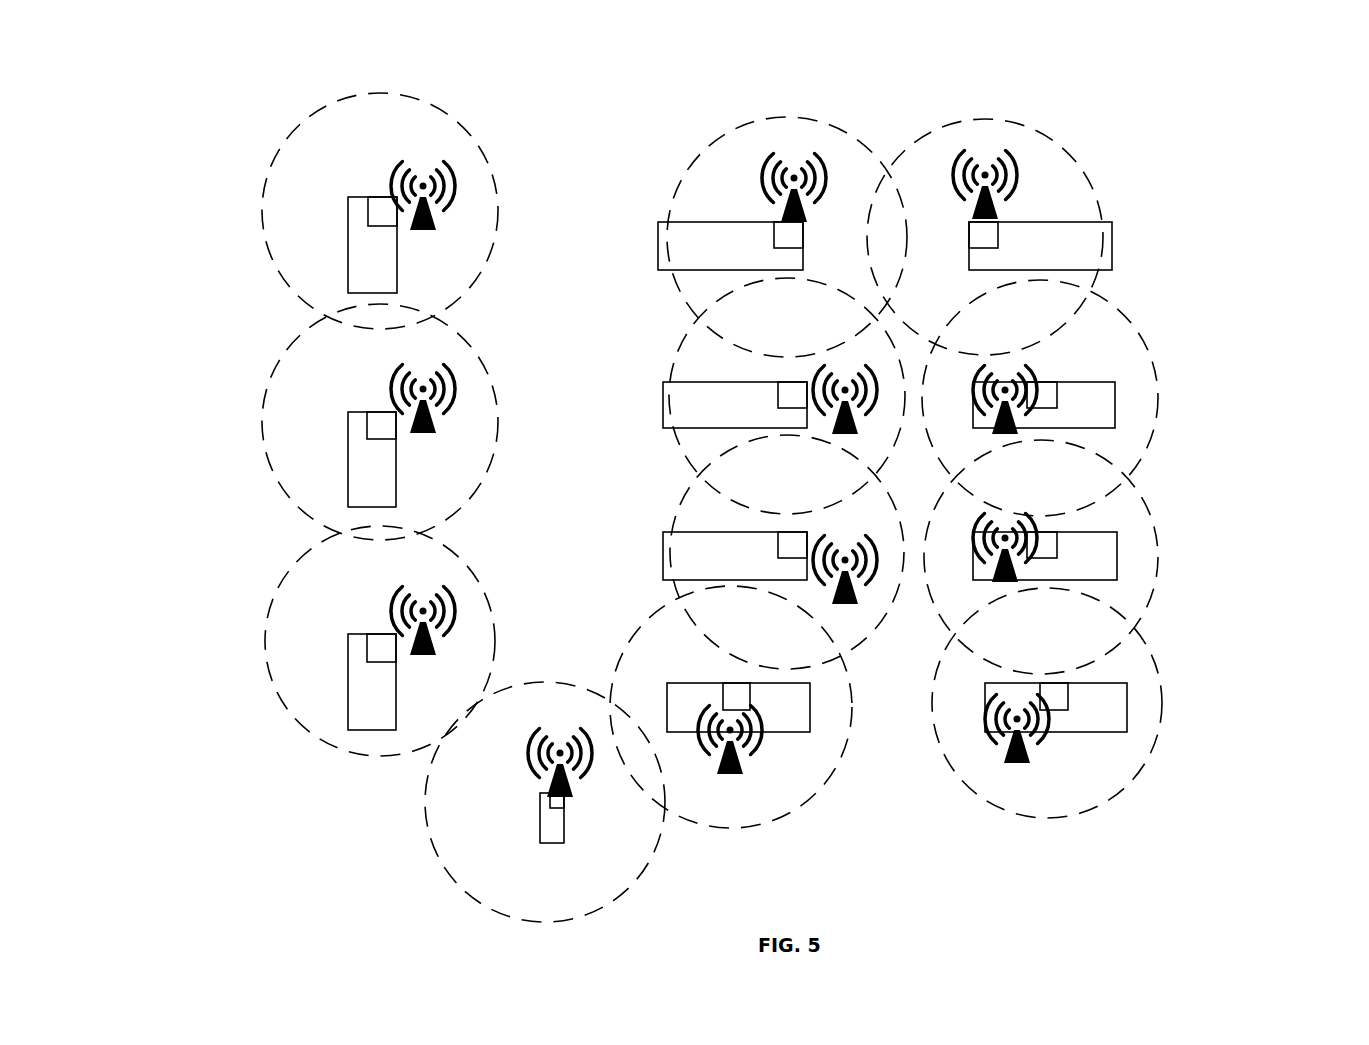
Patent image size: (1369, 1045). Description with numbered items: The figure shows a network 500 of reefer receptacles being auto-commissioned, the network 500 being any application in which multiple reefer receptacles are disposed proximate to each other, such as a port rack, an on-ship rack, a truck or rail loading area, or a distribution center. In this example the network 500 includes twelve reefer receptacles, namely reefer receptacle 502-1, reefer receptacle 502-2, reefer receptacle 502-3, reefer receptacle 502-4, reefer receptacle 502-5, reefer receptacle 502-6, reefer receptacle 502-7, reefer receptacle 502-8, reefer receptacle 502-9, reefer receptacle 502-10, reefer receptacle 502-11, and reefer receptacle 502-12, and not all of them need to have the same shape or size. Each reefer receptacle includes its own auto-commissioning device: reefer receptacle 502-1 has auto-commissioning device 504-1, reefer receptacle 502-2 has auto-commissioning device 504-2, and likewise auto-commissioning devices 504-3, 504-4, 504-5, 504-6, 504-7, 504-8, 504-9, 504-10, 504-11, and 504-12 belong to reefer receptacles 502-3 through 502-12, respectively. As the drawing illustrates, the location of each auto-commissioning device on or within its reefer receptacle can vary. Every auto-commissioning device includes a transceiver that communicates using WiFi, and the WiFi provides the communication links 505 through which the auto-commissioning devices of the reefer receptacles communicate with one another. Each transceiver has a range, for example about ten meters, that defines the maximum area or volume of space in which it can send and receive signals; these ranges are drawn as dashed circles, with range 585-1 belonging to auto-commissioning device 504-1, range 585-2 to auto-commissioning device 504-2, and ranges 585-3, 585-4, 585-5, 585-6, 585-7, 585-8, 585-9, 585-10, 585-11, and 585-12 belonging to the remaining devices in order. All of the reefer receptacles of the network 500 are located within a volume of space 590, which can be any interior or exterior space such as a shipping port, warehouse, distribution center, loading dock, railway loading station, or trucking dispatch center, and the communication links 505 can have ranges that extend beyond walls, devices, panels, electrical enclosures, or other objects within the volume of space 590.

The network 500 is at (1239, 79).
The volume of space 590 is at (283, 843).
The communication links 505 is at (410, 163).
The reefer receptacle 502-1 is at (348, 252).
The reefer receptacle 502-2 is at (346, 461).
The reefer receptacle 502-3 is at (346, 687).
The reefer receptacle 502-4 is at (538, 818).
The reefer receptacle 502-5 is at (682, 680).
The reefer receptacle 502-6 is at (682, 530).
The reefer receptacle 502-7 is at (688, 378).
The reefer receptacle 502-8 is at (690, 220).
The reefer receptacle 502-9 is at (1088, 220).
The reefer receptacle 502-10 is at (1092, 378).
The reefer receptacle 502-11 is at (1110, 532).
The reefer receptacle 502-12 is at (1095, 735).
The auto-commissioning device 504-1 is at (365, 213).
The auto-commissioning device 504-2 is at (393, 417).
The auto-commissioning device 504-3 is at (394, 637).
The auto-commissioning device 504-4 is at (563, 803).
The auto-commissioning device 504-5 is at (725, 683).
The auto-commissioning device 504-6 is at (778, 543).
The auto-commissioning device 504-7 is at (778, 393).
The auto-commissioning device 504-8 is at (775, 235).
The auto-commissioning device 504-9 is at (998, 237).
The auto-commissioning device 504-10 is at (1057, 395).
The auto-commissioning device 504-11 is at (1057, 546).
The auto-commissioning device 504-12 is at (1068, 698).
The range 585-1 is at (457, 123).
The range 585-2 is at (269, 377).
The range 585-3 is at (269, 596).
The range 585-4 is at (427, 807).
The range 585-5 is at (788, 813).
The range 585-6 is at (688, 485).
The range 585-7 is at (688, 326).
The range 585-8 is at (740, 127).
The range 585-9 is at (1040, 130).
The range 585-10 is at (1110, 300).
The range 585-11 is at (1158, 538).
The range 585-12 is at (1072, 818).